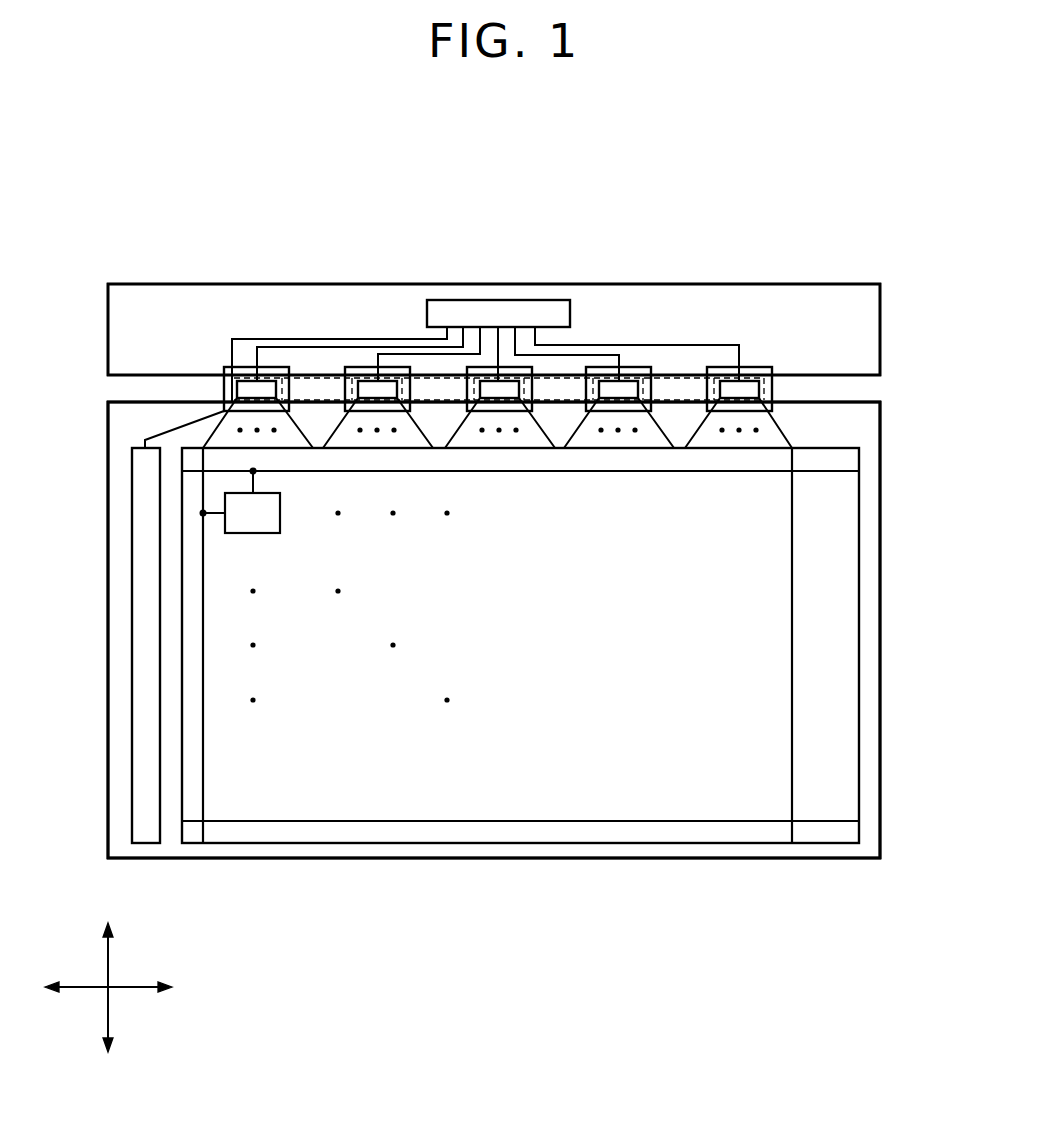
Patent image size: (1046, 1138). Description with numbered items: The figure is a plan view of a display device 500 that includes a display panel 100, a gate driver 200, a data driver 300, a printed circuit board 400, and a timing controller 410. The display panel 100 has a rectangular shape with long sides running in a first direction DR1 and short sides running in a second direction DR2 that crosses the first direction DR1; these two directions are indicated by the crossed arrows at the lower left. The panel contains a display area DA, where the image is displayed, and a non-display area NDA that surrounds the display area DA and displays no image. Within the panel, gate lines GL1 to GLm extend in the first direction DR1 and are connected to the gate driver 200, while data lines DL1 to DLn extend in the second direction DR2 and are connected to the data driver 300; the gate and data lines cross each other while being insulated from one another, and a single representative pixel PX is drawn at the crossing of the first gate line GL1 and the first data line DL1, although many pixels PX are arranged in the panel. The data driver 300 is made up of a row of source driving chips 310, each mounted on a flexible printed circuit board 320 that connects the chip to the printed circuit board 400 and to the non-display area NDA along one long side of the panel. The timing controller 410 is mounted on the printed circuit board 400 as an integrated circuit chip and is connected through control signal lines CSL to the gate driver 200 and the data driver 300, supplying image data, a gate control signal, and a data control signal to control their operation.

The display device 500 is at (826, 179).
The printed circuit board 400 is at (827, 285).
The timing controller 410 is at (495, 299).
The data driver 300 is at (540, 316).
The source driving chip 310 is at (726, 380).
The flexible printed circuit board 320 is at (756, 366).
The display panel 100 is at (882, 425).
The gate driver 200 is at (142, 645).
The control signal line CSL is at (335, 338).
The first gate line GL1 is at (597, 473).
The m-th gate line GLm is at (597, 819).
The first data line DL1 is at (204, 757).
The n-th data line DLn is at (791, 758).
The pixel PX is at (240, 501).
The display area DA is at (838, 648).
The non-display area NDA is at (872, 572).
The first direction DR1 is at (134, 987).
The second direction DR2 is at (116, 974).